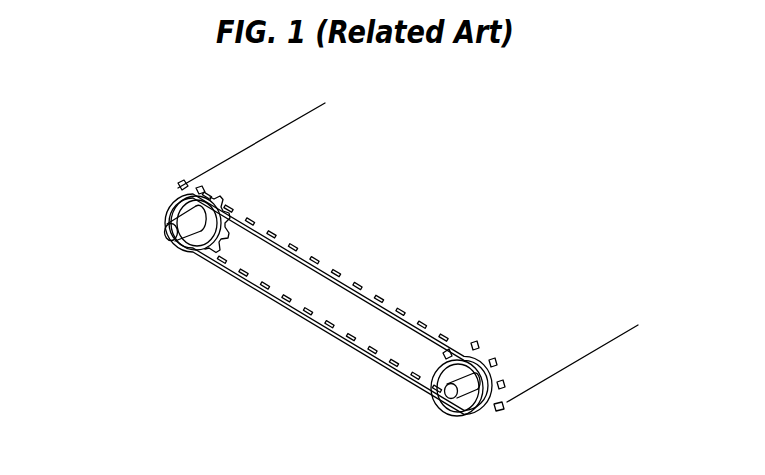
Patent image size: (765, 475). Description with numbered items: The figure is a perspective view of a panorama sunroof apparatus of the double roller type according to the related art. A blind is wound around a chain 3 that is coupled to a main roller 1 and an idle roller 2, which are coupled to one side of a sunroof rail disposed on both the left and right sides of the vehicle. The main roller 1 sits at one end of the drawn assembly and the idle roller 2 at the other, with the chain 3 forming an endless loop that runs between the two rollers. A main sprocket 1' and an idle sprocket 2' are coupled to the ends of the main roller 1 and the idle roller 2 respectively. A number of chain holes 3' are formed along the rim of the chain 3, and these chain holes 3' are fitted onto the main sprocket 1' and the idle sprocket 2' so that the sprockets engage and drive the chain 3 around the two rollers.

The main roller 1 is at (495, 391).
The main sprocket 1' is at (436, 401).
The idle roller 2 is at (152, 215).
The idle sprocket 2' is at (202, 267).
The chain 3 is at (412, 252).
The chain holes 3' is at (328, 303).